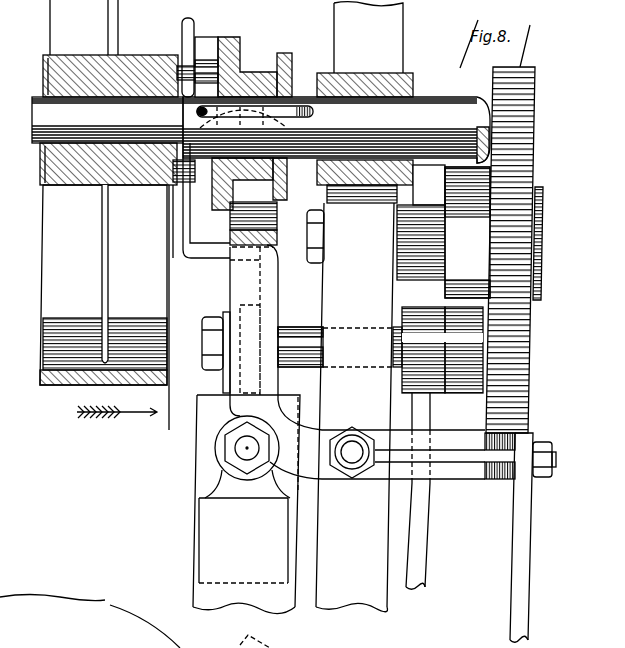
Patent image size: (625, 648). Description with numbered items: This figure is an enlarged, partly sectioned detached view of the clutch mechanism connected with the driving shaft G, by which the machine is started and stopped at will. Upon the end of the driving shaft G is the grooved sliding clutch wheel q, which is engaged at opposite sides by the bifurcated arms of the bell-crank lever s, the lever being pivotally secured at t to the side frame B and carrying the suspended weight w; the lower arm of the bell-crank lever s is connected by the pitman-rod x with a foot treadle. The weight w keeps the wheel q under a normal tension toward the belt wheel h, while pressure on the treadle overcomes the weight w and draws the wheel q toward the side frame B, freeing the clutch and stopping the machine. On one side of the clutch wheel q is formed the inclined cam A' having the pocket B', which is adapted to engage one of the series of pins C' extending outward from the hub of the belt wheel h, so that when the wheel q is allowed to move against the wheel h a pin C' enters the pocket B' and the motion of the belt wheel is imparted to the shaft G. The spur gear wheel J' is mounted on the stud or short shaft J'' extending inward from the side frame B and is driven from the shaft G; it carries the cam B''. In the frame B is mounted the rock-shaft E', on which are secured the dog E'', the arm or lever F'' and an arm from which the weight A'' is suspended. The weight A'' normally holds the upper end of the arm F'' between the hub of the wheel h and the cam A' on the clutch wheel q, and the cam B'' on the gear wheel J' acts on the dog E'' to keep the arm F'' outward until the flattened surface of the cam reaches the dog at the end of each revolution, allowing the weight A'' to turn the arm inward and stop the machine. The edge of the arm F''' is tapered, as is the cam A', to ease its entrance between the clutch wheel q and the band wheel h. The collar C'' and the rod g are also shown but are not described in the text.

The belt wheel h is at (109, 192).
The driving shaft G is at (261, 130).
The grooved sliding wheel q is at (255, 118).
The pins C' is at (171, 57).
The inclined cam A' is at (207, 53).
The pocket B' is at (244, 123).
The collar C'' is at (189, 172).
The arm F''' is at (206, 200).
The spur gear wheel J' is at (392, 250).
The side frame B is at (364, 307).
The stud or short shaft J'' is at (421, 222).
The cam B'' is at (467, 232).
The bell-crank lever S is at (354, 367).
The rock-shaft E' is at (302, 290).
The dog E'' is at (442, 363).
The arm or lever F'' is at (428, 491).
The rod g is at (125, 312).
The weight A'' is at (232, 504).
The suspended weight w is at (243, 552).
The pivot t is at (352, 456).
The pitman-rod x is at (520, 537).